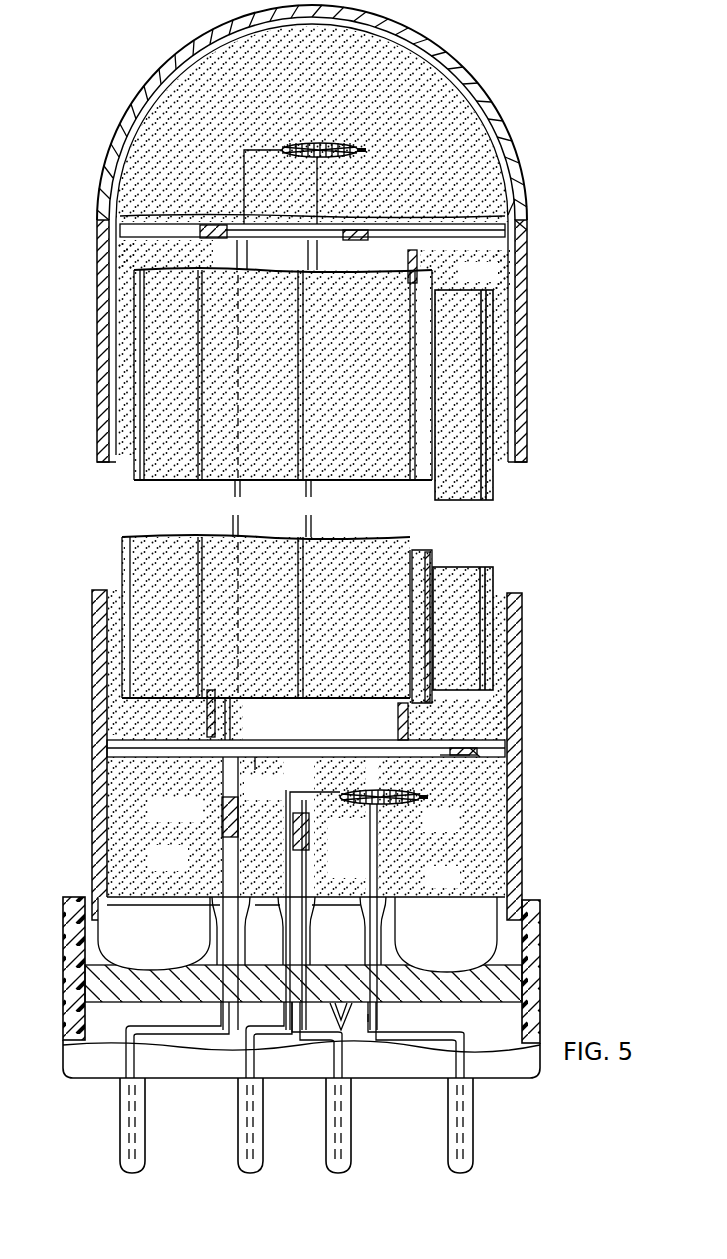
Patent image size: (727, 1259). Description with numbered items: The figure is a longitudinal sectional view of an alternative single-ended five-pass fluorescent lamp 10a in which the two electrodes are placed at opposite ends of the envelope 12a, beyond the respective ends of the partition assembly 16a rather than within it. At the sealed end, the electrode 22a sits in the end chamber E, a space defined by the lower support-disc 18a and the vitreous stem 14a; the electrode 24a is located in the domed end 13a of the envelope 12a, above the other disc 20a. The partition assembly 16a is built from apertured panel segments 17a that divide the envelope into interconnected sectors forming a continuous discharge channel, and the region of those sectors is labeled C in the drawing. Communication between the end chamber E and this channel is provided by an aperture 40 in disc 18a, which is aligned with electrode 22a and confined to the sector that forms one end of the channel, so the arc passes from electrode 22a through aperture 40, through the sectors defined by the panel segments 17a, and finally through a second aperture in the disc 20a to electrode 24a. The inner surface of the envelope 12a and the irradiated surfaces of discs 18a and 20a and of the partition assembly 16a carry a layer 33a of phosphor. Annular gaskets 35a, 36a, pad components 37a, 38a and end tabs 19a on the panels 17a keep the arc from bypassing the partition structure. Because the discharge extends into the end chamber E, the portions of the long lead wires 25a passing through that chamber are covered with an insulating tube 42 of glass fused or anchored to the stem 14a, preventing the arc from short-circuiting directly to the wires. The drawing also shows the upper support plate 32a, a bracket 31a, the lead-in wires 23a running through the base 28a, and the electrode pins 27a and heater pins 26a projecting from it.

The single-ended five-pass fluorescent lamp 10a is at (654, 448).
The envelope 12a is at (530, 438).
The domed end 13a is at (220, 34).
The vitreous stem 14a is at (385, 912).
The partition assembly 16a is at (460, 503).
The apertured panel segments 17a is at (150, 572).
The lower support-disc 18a is at (470, 748).
The end tabs 19a is at (433, 370).
The upper support-disc 20a is at (362, 230).
The electrode 22a is at (402, 806).
The lead-in wires 23a is at (337, 1037).
The electrode 24a is at (322, 143).
The lead wires 25a is at (317, 186).
The heater pins 26a is at (452, 1147).
The electrode pins 27a is at (237, 1143).
The base 28a is at (503, 1060).
The bracket 31a is at (260, 758).
The upper support plate 32a is at (340, 224).
The layer of phosphor 33a is at (405, 50).
The annular gasket 35a is at (445, 757).
The annular gasket 36a is at (520, 202).
The pad component 37a is at (222, 735).
The pad component 38a is at (440, 262).
The aperture 40 is at (440, 755).
The insulating tube 42 is at (222, 865).
The cathode cylinder C is at (290, 262).
The end chamber E is at (458, 853).